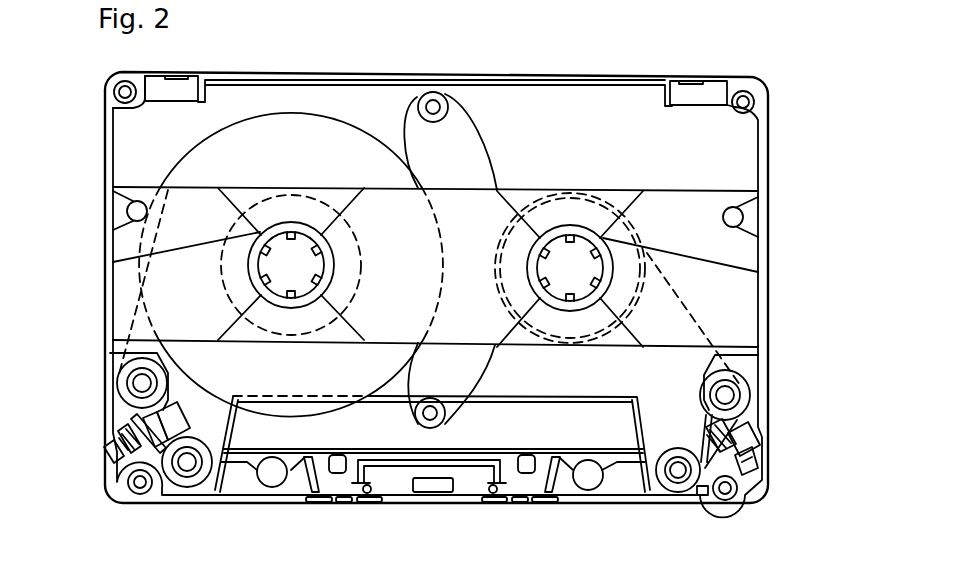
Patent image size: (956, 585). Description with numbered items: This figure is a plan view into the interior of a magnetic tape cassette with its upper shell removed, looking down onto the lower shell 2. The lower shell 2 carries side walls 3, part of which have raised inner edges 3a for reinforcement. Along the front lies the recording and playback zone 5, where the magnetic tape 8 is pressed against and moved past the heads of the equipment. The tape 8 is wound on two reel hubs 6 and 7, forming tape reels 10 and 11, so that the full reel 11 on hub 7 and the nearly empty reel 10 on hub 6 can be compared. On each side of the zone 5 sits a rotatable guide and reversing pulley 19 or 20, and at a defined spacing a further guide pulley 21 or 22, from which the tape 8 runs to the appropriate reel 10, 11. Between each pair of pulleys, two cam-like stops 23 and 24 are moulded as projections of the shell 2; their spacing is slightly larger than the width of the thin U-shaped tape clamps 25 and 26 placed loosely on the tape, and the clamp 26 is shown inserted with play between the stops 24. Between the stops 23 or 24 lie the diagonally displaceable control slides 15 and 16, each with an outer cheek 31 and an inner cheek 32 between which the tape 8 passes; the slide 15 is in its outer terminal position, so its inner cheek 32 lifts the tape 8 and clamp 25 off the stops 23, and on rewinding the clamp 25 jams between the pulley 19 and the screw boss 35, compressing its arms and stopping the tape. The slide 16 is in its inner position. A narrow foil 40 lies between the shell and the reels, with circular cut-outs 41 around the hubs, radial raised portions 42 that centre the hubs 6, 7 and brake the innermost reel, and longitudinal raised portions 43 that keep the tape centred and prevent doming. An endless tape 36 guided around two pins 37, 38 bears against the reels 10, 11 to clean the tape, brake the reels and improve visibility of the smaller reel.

The lower shell 2 is at (609, 112).
The side walls 3 is at (529, 80).
The raised inner edges 3a is at (573, 85).
The recording and playback zone 5 is at (429, 501).
The reel hub 6 is at (583, 228).
The reel hub 7 is at (301, 244).
The magnetic tape 8 is at (125, 304).
The tape reel 10 is at (554, 195).
The tape reel 11 is at (262, 140).
The control slide 15 is at (742, 462).
The control slide 16 is at (112, 482).
The guide and reversing pulley 19 is at (667, 486).
The guide and reversing pulley 20 is at (206, 474).
The guide pulley 21 is at (733, 377).
The guide pulley 22 is at (125, 373).
The stops 23 is at (710, 442).
The stops 24 is at (138, 420).
The tape clamp 25 is at (704, 496).
The tape clamp 26 is at (115, 455).
The outer cheek 31 is at (132, 440).
The inner cheek 32 is at (175, 422).
The boss 35 is at (736, 500).
The endless tape 36 is at (476, 133).
The pin 37 is at (434, 92).
The pin 38 is at (415, 419).
The foil 40 is at (686, 213).
The circular cut-outs 41 is at (280, 277).
The raised portions 42 is at (512, 205).
The raised portions 43 is at (723, 263).